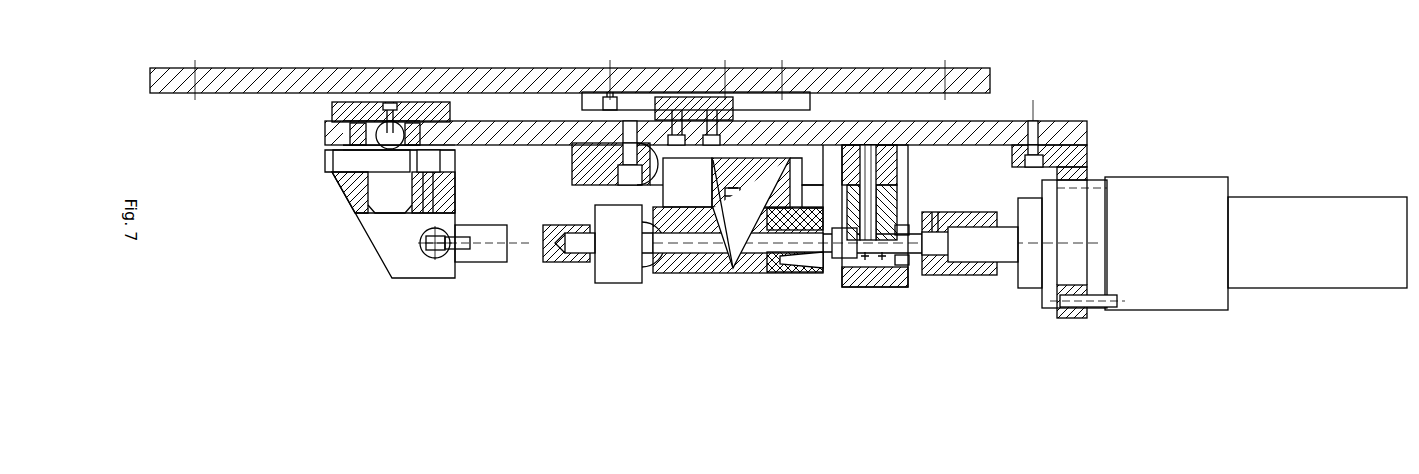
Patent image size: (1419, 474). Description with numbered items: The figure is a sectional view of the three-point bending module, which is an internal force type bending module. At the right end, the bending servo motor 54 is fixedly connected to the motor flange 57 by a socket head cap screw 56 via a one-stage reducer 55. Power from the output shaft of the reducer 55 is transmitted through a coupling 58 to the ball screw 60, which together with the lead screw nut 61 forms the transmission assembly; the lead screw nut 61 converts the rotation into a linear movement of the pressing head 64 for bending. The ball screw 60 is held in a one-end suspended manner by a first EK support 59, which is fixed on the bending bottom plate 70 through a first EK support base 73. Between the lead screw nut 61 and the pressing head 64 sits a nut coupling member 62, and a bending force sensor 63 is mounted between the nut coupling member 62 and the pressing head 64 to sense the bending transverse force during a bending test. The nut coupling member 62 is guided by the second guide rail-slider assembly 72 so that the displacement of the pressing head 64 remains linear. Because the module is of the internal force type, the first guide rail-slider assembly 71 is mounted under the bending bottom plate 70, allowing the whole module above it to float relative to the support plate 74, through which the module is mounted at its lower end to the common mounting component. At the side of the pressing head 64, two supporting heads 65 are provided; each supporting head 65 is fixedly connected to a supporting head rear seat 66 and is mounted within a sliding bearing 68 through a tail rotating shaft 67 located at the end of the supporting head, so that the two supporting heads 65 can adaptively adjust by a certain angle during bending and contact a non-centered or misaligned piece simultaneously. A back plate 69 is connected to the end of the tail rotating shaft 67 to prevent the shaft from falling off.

The bending servo motor 54 is at (1310, 255).
The one-stage reducer 55 is at (1205, 248).
The socket head cap screw 56 is at (1110, 305).
The motor flange 57 is at (1078, 317).
The coupling 58 is at (982, 272).
The first EK support 59 is at (892, 282).
The ball screw 60 is at (838, 255).
The lead screw nut 61 is at (818, 267).
The nut coupling member 62 is at (747, 268).
The bending force sensor 63 is at (620, 263).
The pressing head 64 is at (553, 262).
The supporting head 65 is at (492, 253).
The supporting head rear seat 66 is at (382, 227).
The tail rotating shaft 67 is at (353, 158).
The sliding bearing 68 is at (362, 125).
The back plate 69 is at (366, 108).
The bending bottom plate 70 is at (492, 128).
The first guide rail-slider assembly 71 is at (663, 100).
The second guide rail-slider assembly 72 is at (763, 160).
The first EK support base 73 is at (885, 155).
The support plate 74 is at (970, 80).